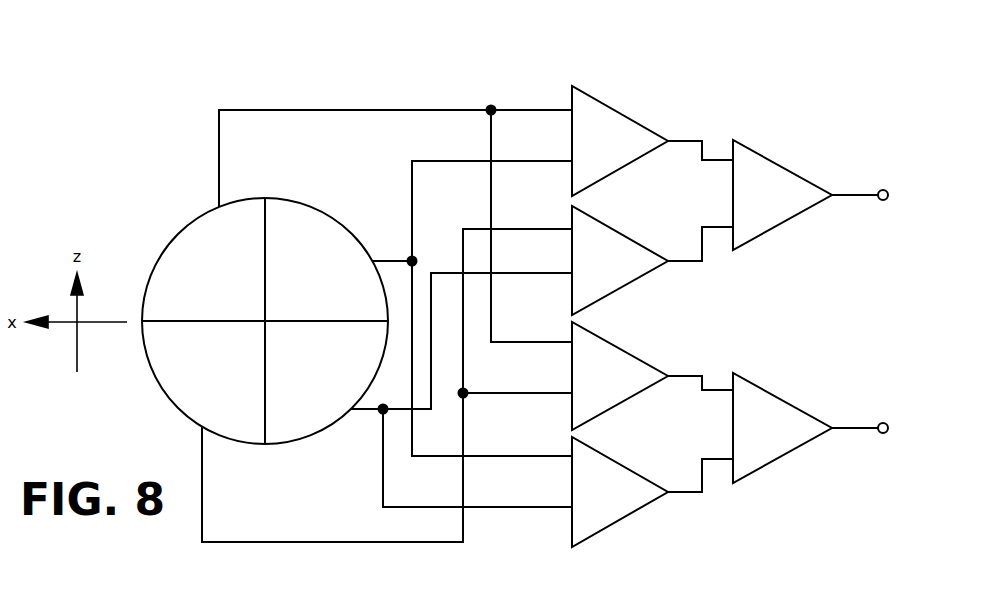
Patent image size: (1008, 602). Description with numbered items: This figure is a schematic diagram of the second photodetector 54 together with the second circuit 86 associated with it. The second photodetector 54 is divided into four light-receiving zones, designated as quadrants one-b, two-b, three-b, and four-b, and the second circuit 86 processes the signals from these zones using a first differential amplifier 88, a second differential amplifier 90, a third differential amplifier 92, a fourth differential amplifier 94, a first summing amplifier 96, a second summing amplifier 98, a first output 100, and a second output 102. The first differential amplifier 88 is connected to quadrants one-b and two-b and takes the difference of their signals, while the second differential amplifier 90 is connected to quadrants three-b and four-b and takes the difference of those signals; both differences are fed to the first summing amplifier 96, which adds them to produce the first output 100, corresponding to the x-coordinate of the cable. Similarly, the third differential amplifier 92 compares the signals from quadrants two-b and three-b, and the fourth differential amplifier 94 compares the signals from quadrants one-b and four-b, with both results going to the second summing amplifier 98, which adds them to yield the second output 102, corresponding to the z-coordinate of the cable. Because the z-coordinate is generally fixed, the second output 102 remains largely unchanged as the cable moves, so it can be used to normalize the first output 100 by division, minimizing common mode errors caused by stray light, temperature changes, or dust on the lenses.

The second photodetector 54 is at (165, 247).
The second circuit 86 is at (530, 57).
The first differential amplifier 88 is at (627, 118).
The second differential amplifier 90 is at (627, 238).
The third differential amplifier 92 is at (627, 354).
The fourth differential amplifier 94 is at (627, 469).
The first summing amplifier 96 is at (765, 157).
The second summing amplifier 98 is at (765, 390).
The first output 100 is at (887, 192).
The second output 102 is at (887, 425).